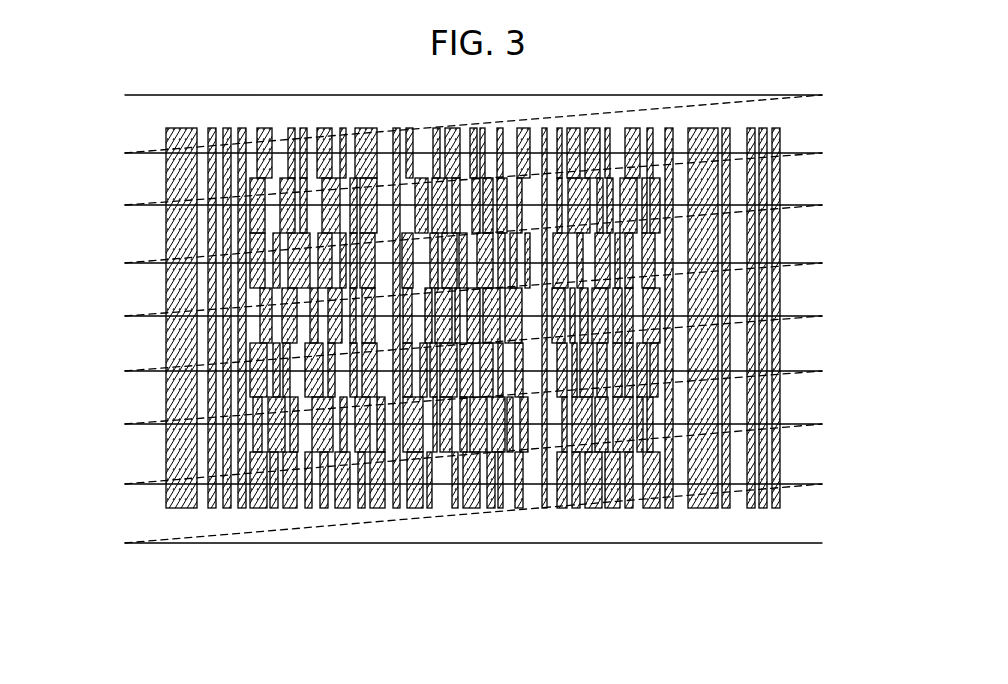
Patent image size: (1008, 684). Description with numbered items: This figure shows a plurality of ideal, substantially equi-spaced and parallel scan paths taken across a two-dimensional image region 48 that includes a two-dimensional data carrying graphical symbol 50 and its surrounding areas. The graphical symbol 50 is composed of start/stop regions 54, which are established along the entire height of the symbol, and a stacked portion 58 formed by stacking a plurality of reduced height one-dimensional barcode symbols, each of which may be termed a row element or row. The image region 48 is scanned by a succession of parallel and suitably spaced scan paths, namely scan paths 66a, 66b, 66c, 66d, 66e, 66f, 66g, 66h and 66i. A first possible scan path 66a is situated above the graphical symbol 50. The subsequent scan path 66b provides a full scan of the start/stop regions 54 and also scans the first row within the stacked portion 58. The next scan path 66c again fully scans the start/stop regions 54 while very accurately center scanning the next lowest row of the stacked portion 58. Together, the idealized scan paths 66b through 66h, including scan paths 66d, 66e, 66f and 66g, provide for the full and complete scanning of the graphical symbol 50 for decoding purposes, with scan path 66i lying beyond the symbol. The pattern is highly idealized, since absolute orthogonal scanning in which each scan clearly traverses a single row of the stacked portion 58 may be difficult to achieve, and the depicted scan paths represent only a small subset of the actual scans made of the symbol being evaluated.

The image region 48 is at (470, 365).
The 2-dimensional data carrying graphical symbol 50 is at (525, 352).
The start/stop regions 54 is at (165, 552).
The 2D stacked portion 58 is at (248, 552).
The scan path 66a is at (125, 95).
The scan path 66b is at (822, 153).
The scan path 66c is at (125, 205).
The scan path 66d is at (822, 263).
The scan path 66e is at (125, 316).
The scan path 66f is at (822, 371).
The scan path 66g is at (125, 424).
The scan path 66h is at (822, 484).
The scan path 66i is at (668, 543).